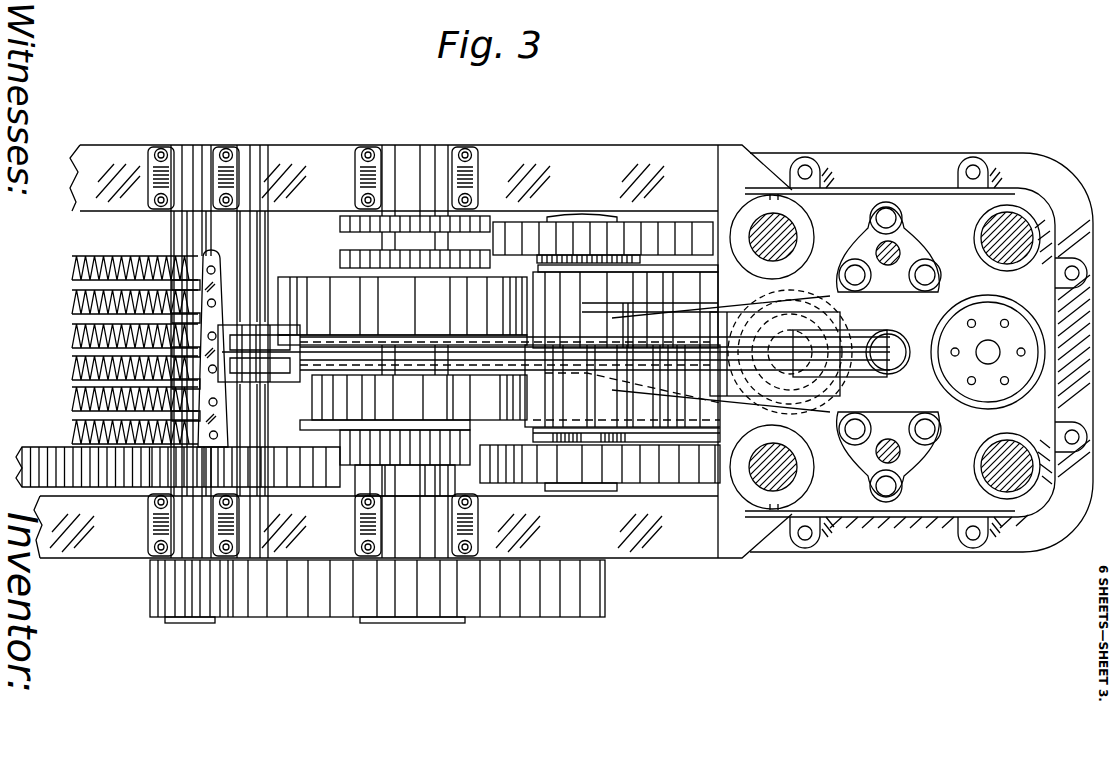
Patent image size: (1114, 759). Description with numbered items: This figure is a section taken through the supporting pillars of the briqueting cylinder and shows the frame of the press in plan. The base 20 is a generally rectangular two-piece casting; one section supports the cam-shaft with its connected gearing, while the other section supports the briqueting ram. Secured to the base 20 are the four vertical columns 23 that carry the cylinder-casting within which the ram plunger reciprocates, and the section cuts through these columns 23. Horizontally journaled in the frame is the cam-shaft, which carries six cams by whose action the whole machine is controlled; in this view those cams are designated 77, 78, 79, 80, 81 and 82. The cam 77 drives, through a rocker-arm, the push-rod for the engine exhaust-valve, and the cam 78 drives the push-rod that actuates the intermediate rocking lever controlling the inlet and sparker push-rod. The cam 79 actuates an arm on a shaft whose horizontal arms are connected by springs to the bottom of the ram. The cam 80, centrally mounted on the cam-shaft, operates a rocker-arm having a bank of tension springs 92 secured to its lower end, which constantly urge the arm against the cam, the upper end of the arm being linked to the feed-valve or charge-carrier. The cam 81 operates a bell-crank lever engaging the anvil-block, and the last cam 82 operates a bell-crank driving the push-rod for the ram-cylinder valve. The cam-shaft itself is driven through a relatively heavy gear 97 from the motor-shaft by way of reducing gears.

The base 20 is at (662, 558).
The vertical columns 23 is at (985, 480).
The cam 77 is at (338, 224).
The cam 78 is at (338, 259).
The cam 79 is at (402, 311).
The cam 80 is at (554, 363).
The cam 81 is at (413, 402).
The cam 82 is at (405, 463).
The bank of tension springs 92 is at (72, 335).
The gear 97 is at (290, 607).